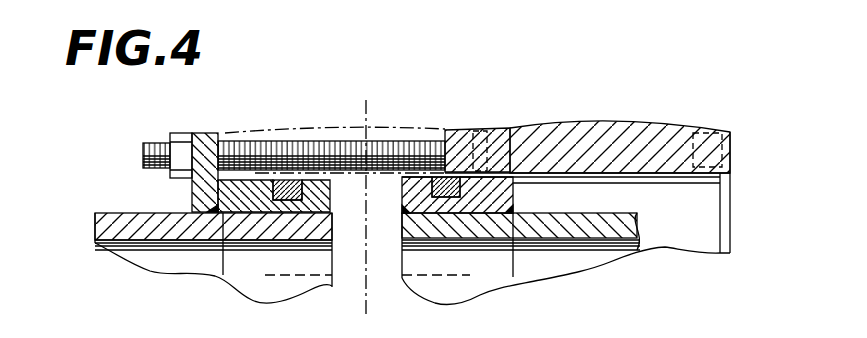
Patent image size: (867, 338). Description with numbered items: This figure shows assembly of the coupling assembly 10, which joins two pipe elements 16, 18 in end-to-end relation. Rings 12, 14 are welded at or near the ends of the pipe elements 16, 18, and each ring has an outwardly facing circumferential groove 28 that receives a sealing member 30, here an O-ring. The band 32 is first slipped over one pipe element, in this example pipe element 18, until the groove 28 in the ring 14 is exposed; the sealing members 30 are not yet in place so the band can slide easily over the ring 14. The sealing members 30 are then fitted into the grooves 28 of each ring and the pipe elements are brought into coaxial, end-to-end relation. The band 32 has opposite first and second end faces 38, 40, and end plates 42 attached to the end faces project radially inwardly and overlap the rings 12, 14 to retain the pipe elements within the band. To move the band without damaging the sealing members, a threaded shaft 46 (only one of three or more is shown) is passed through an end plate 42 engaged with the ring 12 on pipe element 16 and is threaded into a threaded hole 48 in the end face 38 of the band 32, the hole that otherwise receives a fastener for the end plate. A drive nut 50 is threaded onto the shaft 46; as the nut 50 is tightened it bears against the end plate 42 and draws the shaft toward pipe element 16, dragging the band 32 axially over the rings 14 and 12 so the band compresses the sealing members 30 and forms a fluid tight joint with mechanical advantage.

The coupling assembly 10 is at (553, 57).
The first ring 12 is at (223, 275).
The second ring 14 is at (513, 277).
The pipe element 16 is at (100, 228).
The pipe element 18 is at (640, 230).
The circumferential groove 28 is at (318, 178).
The sealing member 30 is at (285, 175).
The band 32 is at (602, 123).
The first end face 38 is at (445, 131).
The second end face 40 is at (735, 133).
The end plate 42 is at (208, 190).
The threaded shaft 46 is at (248, 134).
The threaded hole 48 is at (477, 128).
The drive nut 50 is at (182, 140).